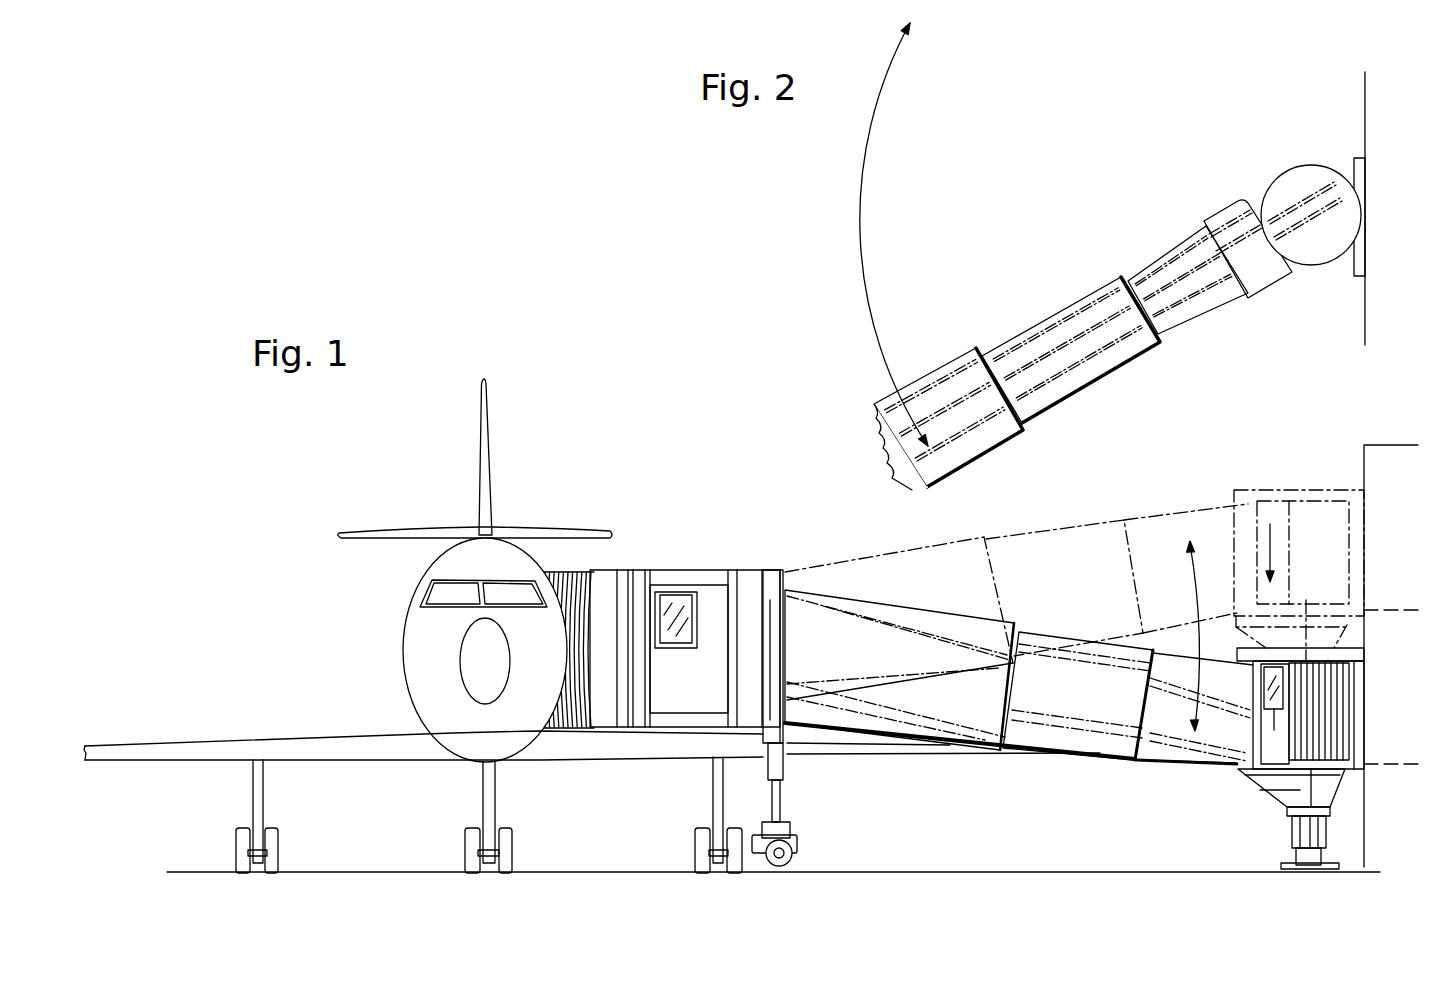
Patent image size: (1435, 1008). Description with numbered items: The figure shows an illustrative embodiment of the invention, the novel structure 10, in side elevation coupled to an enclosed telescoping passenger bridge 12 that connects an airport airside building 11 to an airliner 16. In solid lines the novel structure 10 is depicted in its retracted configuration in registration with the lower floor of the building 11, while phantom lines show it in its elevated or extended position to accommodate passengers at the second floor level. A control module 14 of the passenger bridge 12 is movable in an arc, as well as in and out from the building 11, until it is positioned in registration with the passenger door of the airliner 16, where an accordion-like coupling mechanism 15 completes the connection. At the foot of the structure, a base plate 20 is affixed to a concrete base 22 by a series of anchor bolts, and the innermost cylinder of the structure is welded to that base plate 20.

In FIG. 1, the novel structure 10 is at (1261, 476).
In FIG. 2, the novel structure 10 is at (1273, 150).
In FIG. 1, the airport airside building 11 is at (1369, 464).
In FIG. 2, the airport airside building 11 is at (1367, 95).
In FIG. 1, the enclosed telescoping passenger bridge 12 is at (1098, 512).
In FIG. 2, the enclosed telescoping passenger bridge 12 is at (1131, 259).
In FIG. 1, the control module 14 is at (697, 565).
In FIG. 1, the accordion-like coupling mechanism 15 is at (557, 562).
In FIG. 1, the airliner 16 is at (410, 595).
In FIG. 1, the base plate 20 is at (1289, 865).
In FIG. 1, the concrete base 22 is at (1107, 867).